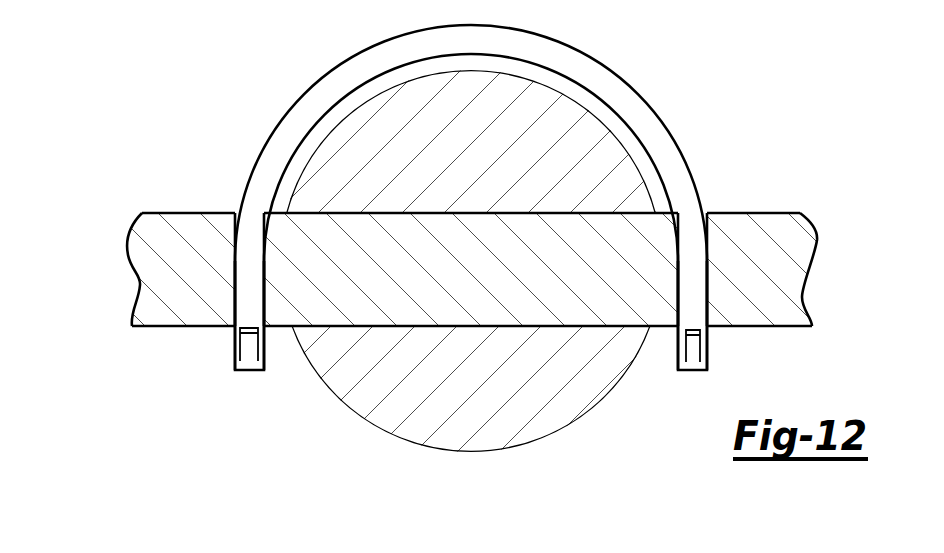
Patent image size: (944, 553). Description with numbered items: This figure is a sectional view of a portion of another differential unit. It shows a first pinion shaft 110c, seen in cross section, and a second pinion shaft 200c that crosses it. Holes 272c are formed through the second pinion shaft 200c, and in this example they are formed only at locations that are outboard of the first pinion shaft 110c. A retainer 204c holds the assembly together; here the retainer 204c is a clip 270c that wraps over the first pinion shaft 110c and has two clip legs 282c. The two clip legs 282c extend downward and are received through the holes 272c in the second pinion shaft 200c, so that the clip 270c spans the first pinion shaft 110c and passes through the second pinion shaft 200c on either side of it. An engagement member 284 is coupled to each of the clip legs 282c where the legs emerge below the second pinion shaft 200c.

The retainer 204c is at (472, 232).
The first pinion shaft 110c is at (345, 133).
The clip 270c is at (263, 172).
The holes 272c is at (235, 263).
The second pinion shaft 200c is at (145, 254).
The clip legs 282c is at (248, 297).
The engagement member 284 is at (250, 352).